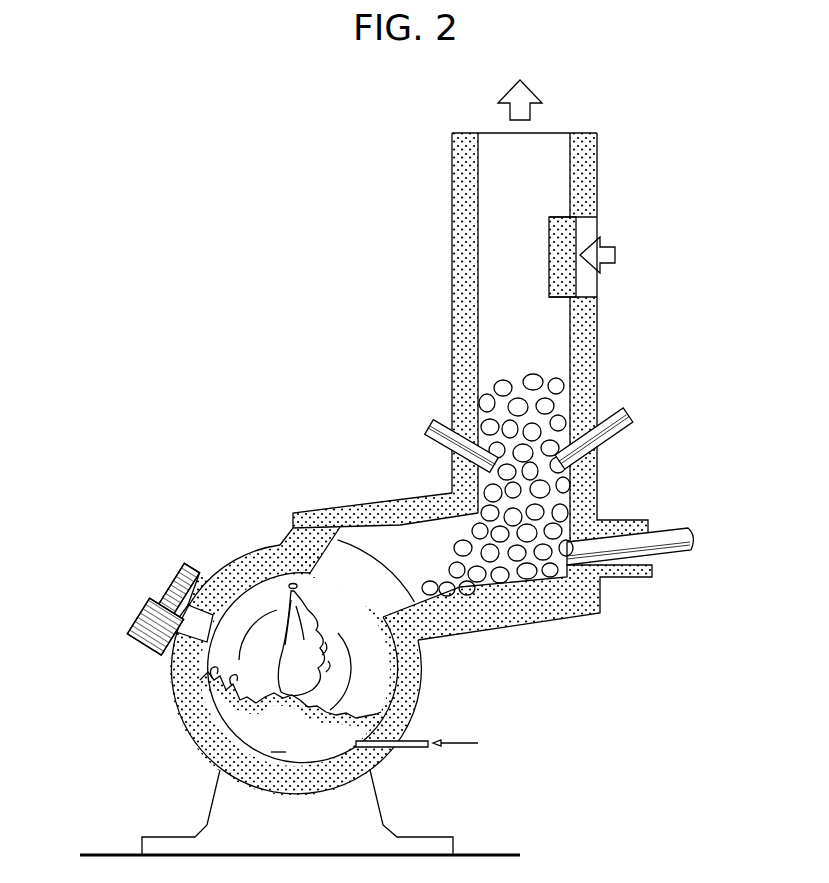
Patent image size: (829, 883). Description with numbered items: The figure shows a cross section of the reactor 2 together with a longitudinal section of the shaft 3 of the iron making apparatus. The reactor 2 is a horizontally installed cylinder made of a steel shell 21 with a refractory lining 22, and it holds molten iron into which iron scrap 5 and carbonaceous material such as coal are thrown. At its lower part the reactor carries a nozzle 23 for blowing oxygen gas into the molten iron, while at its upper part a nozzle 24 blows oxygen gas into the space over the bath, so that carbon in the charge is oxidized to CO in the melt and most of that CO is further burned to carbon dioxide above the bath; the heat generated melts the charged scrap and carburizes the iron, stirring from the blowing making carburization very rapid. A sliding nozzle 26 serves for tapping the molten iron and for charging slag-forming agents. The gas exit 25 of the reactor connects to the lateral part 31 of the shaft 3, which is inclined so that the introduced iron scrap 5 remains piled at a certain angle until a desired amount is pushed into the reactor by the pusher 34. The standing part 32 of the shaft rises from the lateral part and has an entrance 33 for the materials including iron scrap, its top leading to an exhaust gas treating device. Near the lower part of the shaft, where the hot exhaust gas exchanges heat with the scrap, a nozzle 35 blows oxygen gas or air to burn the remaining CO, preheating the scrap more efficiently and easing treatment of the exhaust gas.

The cylindrical reactor 2 is at (270, 666).
The shaft 3 is at (527, 276).
The iron scrap 5 is at (555, 500).
The furnace lining / wall 21 is at (238, 556).
The refractory lining 22 is at (272, 613).
The lower oxygen nozzle 23 is at (403, 748).
The upper oxygen nozzle 24 is at (303, 600).
The gas exit 25 is at (357, 583).
The sliding nozzle 26 is at (173, 600).
The lateral part of shaft 31 is at (418, 555).
The standing part of shaft 32 is at (498, 318).
The entrance 33 is at (562, 248).
The pusher 34 is at (675, 555).
The nozzle for blowing oxygen gas or air 35 is at (443, 423).